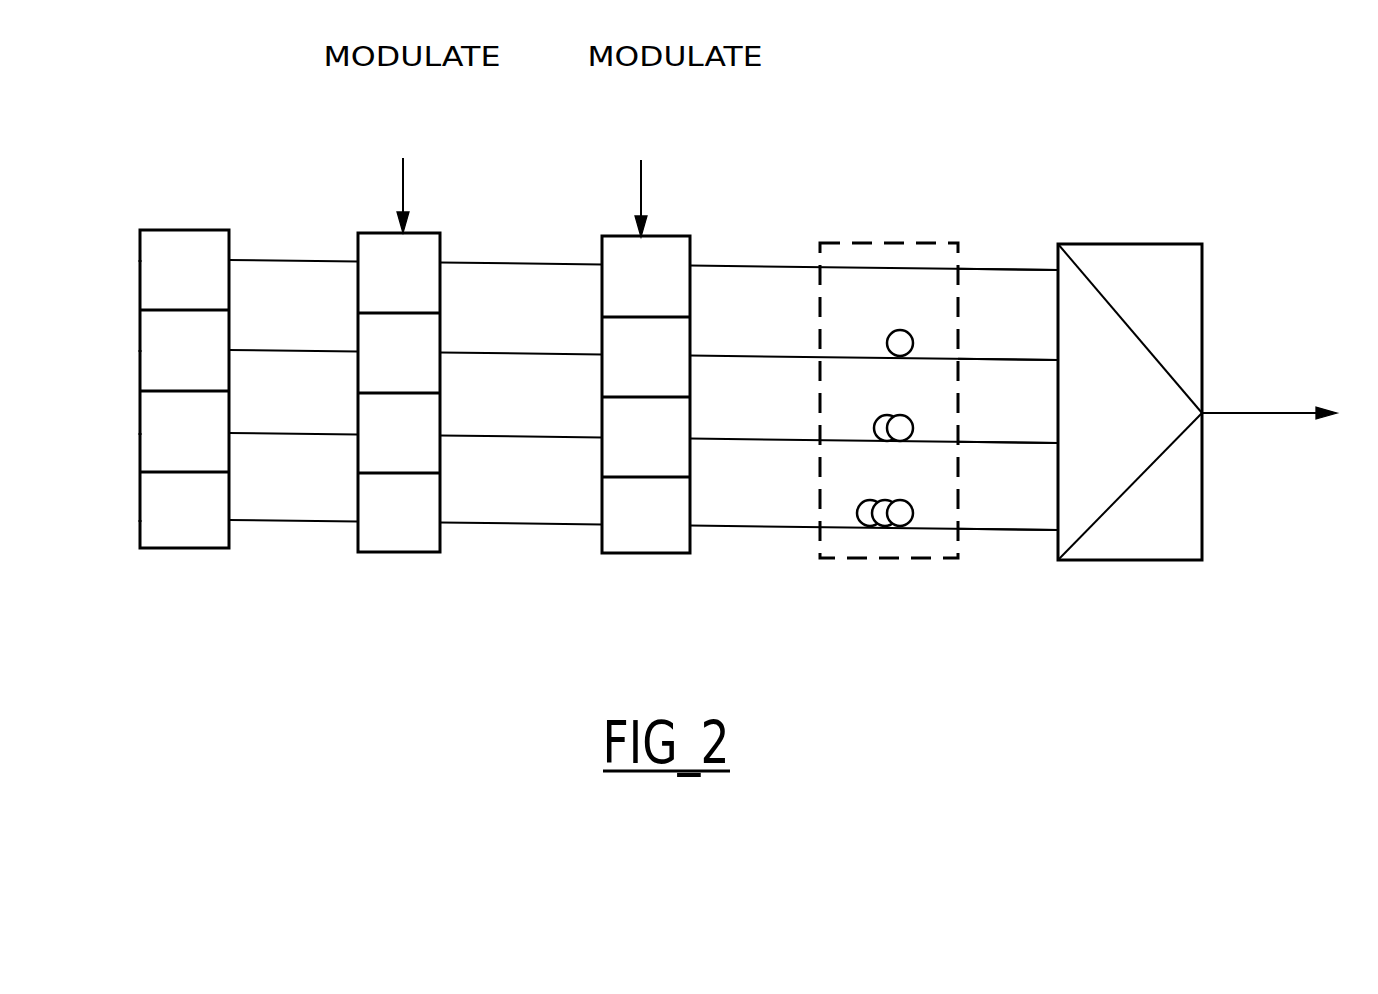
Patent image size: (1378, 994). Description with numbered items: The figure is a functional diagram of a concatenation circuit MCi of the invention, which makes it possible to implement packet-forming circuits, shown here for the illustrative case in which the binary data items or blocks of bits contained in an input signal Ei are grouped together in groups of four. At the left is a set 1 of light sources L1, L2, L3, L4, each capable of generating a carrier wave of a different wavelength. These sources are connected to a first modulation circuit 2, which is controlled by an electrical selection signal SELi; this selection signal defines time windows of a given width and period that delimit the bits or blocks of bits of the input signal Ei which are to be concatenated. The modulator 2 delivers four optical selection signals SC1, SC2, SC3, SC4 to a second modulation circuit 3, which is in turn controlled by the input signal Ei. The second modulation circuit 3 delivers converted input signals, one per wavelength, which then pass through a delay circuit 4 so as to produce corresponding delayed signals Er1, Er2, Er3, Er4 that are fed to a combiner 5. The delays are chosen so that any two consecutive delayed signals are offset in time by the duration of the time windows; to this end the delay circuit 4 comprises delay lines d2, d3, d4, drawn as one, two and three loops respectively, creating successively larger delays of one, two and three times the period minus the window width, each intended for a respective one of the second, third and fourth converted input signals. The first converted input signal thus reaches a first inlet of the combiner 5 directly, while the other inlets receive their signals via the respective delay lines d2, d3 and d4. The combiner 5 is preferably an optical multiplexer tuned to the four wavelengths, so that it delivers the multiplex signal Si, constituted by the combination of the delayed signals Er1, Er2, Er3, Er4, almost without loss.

The set of light sources 1 is at (203, 550).
The first modulation circuit 2 is at (418, 555).
The second modulation circuit 3 is at (660, 555).
The delay circuit 4 is at (889, 445).
The combiner 5 is at (1127, 563).
The delay line d2 is at (898, 330).
The delay line d3 is at (900, 415).
The delay line d4 is at (900, 500).
The light source L1 is at (140, 262).
The light source L2 is at (140, 342).
The light source L3 is at (140, 425).
The light source L4 is at (140, 497).
The optical selection signal SC1 is at (521, 262).
The optical selection signal SC2 is at (521, 354).
The optical selection signal SC3 is at (521, 438).
The optical selection signal SC4 is at (519, 524).
The delayed signal Er1 is at (1011, 268).
The delayed signal Er2 is at (1008, 359).
The delayed signal Er3 is at (1004, 443).
The delayed signal Er4 is at (1001, 530).
The electrical selection signal SELi is at (401, 180).
The input signal Ei is at (638, 184).
The concatenation circuit MCi is at (837, 110).
The multiplex signal Si is at (1277, 399).